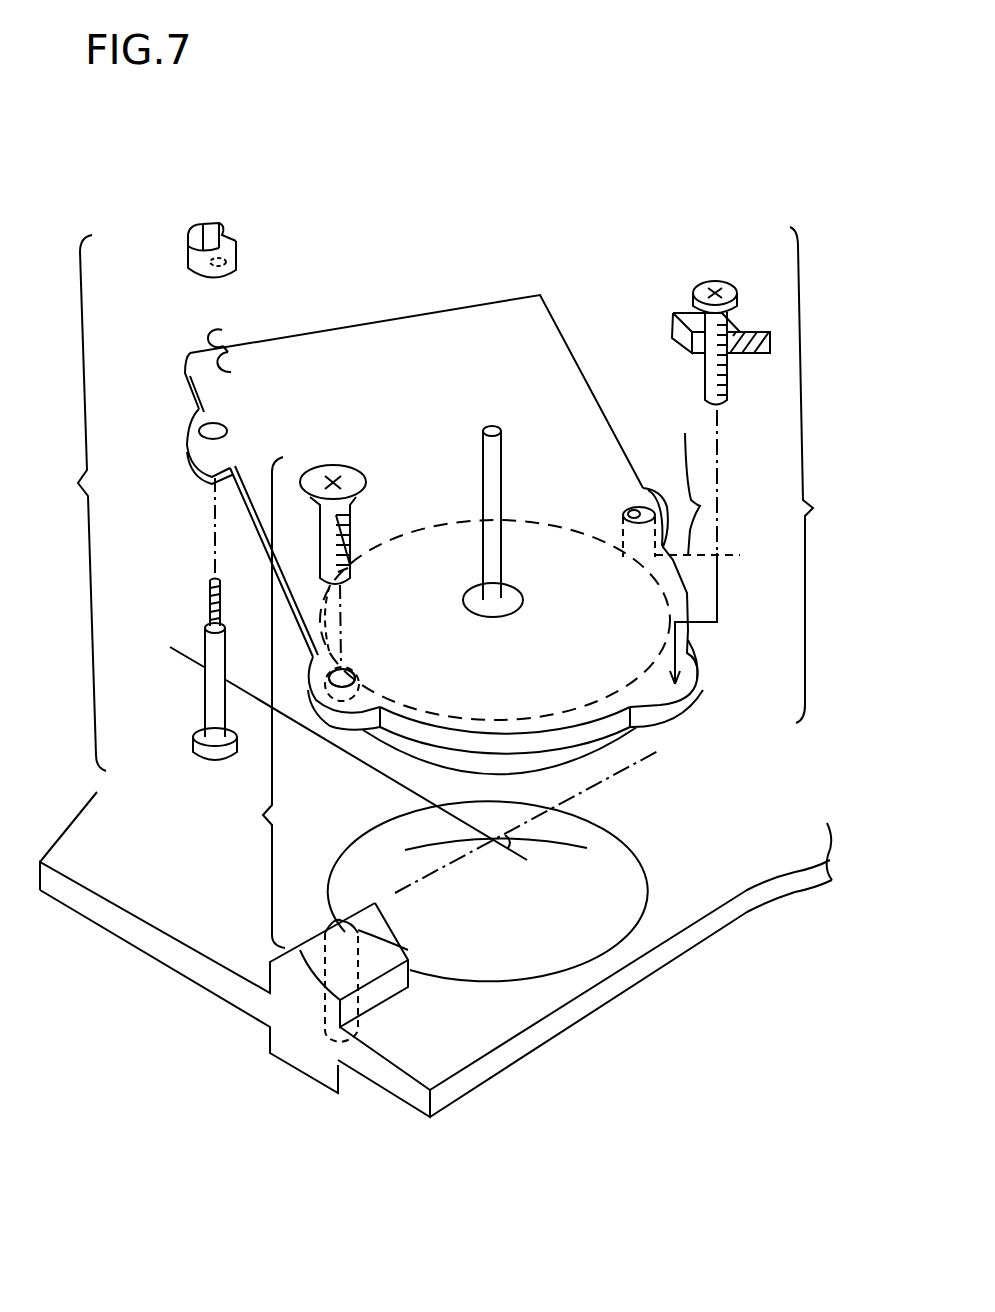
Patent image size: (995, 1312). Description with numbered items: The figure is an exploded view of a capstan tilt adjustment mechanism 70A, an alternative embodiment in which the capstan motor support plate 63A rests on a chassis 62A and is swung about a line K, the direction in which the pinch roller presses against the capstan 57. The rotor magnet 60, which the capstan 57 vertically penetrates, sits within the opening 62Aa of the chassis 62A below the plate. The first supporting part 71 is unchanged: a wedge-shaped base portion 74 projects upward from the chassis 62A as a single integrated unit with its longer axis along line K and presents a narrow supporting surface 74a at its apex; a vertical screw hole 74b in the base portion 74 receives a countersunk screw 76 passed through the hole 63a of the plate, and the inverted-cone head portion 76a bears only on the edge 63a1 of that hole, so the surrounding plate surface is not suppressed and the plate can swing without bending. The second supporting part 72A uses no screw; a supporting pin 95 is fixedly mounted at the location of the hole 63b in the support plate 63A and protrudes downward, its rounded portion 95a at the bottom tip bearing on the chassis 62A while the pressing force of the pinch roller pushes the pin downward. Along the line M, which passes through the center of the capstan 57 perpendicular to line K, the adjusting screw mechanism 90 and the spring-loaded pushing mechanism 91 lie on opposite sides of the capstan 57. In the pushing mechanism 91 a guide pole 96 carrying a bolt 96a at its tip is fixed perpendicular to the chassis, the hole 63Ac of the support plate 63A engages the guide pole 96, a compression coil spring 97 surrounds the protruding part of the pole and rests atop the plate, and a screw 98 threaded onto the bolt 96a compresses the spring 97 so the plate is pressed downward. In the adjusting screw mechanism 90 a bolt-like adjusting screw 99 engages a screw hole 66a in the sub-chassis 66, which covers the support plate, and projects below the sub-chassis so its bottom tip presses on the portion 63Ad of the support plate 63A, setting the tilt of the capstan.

The capstan tilt adjustment mechanism 70A is at (590, 151).
The screw 98 is at (240, 248).
The compression coil spring 97 is at (228, 332).
The capstan motor support plate 63A is at (470, 304).
The adjusting screw 99 is at (722, 288).
The screw hole 66a is at (712, 350).
The sub-chassis 66 is at (775, 300).
The hole 63Ac is at (205, 428).
The spring-loaded pushing mechanism 91 is at (73, 503).
The countersunk screw 76 is at (328, 465).
The head portion 76a is at (363, 478).
The capstan 57 is at (503, 454).
The hole 63b is at (632, 510).
The second supporting part 72A is at (700, 506).
The adjusting screw mechanism 90 is at (819, 475).
The supporting pin 95 is at (715, 488).
The rounded portion 95a is at (705, 598).
The bolt 96a is at (208, 603).
The hole 63a is at (348, 668).
The edge 63a1 is at (357, 676).
The guide pole 96 is at (205, 683).
The portion 63Ad is at (690, 692).
The first supporting part 71 is at (258, 702).
The line M is at (387, 777).
The rotor magnet 60 is at (482, 760).
The supporting surface 74a is at (350, 912).
The line K is at (557, 812).
The base portion 74 is at (306, 938).
The screw hole 74b is at (405, 948).
The chassis 62A is at (147, 940).
The opening of base plate 62Aa is at (603, 950).